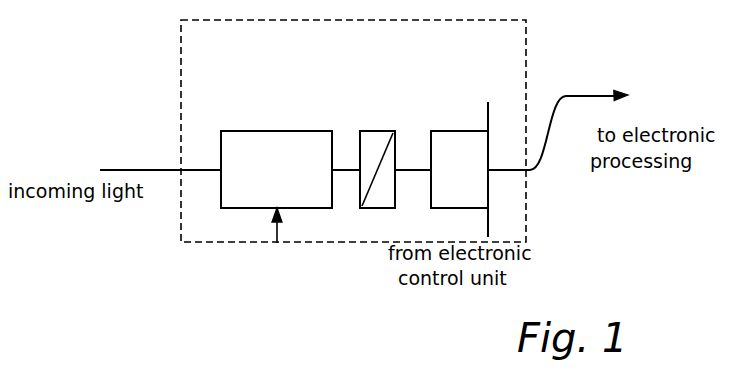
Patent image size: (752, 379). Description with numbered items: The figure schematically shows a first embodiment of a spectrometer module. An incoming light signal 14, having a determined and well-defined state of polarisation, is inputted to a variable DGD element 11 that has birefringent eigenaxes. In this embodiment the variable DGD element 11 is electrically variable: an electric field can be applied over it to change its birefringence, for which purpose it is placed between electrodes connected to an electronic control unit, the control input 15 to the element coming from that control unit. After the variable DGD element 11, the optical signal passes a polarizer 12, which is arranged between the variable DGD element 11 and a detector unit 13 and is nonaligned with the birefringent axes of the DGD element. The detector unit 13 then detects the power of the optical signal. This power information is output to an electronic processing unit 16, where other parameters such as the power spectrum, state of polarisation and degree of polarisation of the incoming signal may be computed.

The variable DGD element 11 is at (270, 119).
The polarizer 12 is at (372, 119).
The detector unit 13 is at (451, 118).
The incoming light signal 14 is at (145, 155).
The control input from electronic control unit 15 is at (277, 243).
The electronic processing unit 16 is at (583, 126).